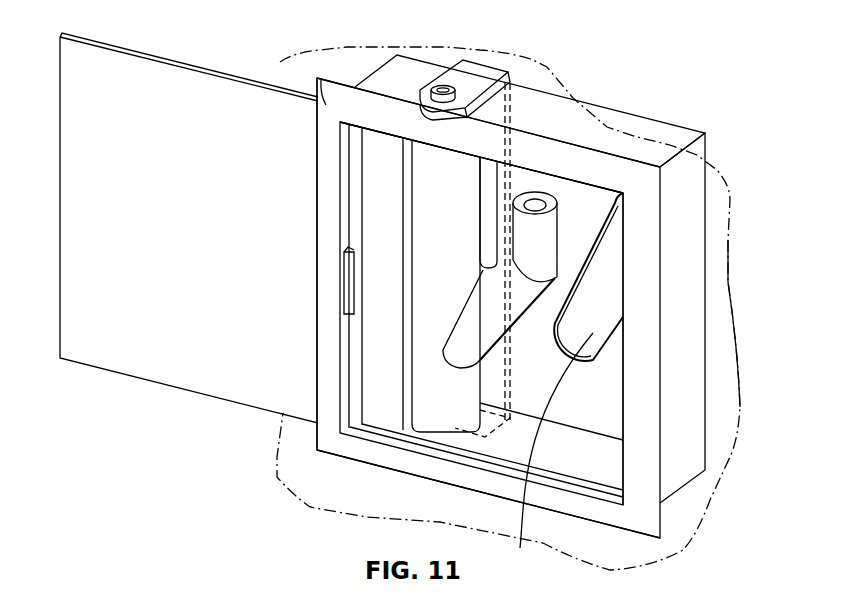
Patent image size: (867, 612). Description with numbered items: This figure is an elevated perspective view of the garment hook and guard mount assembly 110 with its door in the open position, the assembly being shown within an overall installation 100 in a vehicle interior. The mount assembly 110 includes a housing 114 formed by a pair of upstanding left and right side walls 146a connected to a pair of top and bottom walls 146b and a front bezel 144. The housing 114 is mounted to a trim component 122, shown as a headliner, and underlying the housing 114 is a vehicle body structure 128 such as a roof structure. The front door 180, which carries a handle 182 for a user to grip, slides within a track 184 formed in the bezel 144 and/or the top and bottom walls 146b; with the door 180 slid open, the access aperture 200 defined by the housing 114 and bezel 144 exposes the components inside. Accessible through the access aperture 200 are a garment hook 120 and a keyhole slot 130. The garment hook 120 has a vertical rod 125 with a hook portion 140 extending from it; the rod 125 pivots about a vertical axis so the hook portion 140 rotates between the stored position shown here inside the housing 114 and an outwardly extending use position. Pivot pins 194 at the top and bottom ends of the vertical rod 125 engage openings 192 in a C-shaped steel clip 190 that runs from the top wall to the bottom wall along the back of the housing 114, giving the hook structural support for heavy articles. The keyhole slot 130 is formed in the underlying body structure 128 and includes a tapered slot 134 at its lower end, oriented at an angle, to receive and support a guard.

The enclosure outline 100 is at (508, 329).
The garment hook and guard mount assembly 110 is at (713, 107).
The housing 114 is at (678, 194).
The garment hook 120 is at (412, 232).
The trim component 122 is at (728, 282).
The vertical rod 125 is at (433, 188).
The vehicle body structure 128 is at (652, 538).
The keyhole slot 130 is at (558, 281).
The tapered slot 134 is at (603, 403).
The hook portion 140 is at (545, 170).
The front bezel 144 is at (623, 193).
The side walls 146a is at (317, 450).
The top and bottom walls 146b is at (622, 168).
The front door 180 is at (97, 178).
The handle 182 is at (343, 288).
The track 184 is at (590, 485).
The C-shaped steel clip 190 is at (482, 72).
The openings 192 is at (537, 200).
The pivot pins 194 is at (443, 86).
The access aperture 200 is at (597, 380).